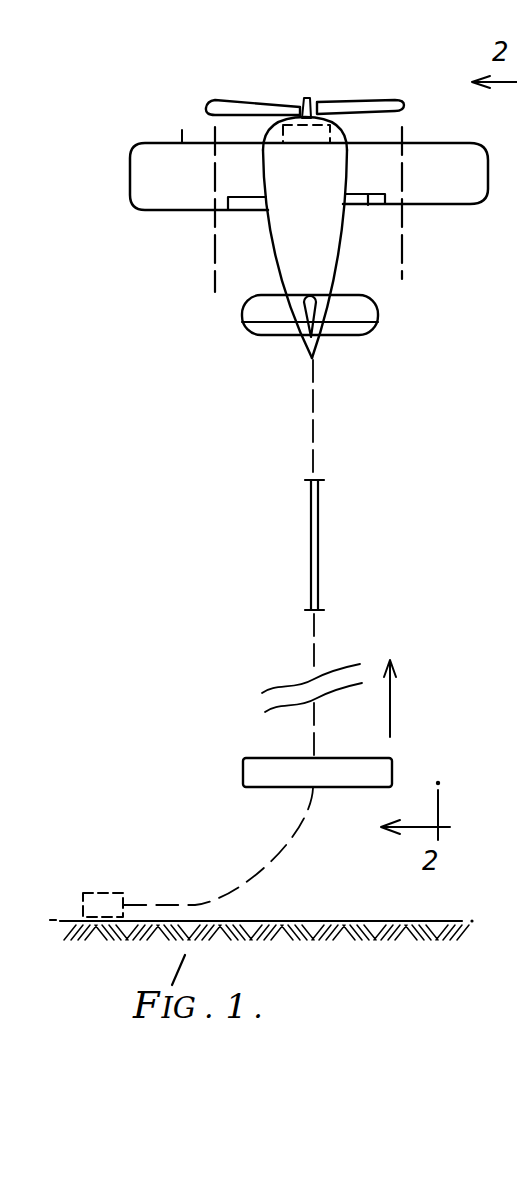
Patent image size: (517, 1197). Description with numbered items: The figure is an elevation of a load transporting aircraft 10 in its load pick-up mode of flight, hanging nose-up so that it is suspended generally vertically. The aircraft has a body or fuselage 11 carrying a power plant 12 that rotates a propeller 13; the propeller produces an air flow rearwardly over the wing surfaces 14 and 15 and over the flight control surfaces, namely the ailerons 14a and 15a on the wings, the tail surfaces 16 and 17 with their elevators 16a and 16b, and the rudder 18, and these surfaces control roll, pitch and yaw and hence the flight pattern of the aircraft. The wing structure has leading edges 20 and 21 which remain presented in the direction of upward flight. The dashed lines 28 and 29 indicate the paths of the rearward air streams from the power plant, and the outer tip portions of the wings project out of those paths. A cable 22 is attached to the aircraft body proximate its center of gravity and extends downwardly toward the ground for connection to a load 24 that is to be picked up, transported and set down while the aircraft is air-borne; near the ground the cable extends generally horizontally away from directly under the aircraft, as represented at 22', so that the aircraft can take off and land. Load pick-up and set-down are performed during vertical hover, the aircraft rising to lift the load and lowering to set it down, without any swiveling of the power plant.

The aircraft 10 is at (188, 311).
The body or fuselage 11 is at (323, 257).
The power plant 12 is at (323, 127).
The propeller 13 is at (237, 100).
The wing surface 14 is at (232, 172).
The aileron 14a is at (253, 212).
The wing surface 15 is at (365, 158).
The aileron 15a is at (370, 208).
The tail surface 16 is at (245, 310).
The elevator 16a is at (262, 335).
The elevator 16b is at (357, 335).
The tail surface 17 is at (372, 313).
The rudder 18 is at (302, 320).
The leading edge 20 is at (182, 143).
The leading edge 21 is at (448, 142).
The cable 22 is at (288, 559).
The cable horizontal portion 22' is at (198, 852).
The load 24 is at (247, 775).
The air stream path 28 is at (213, 252).
The air stream path 29 is at (403, 242).